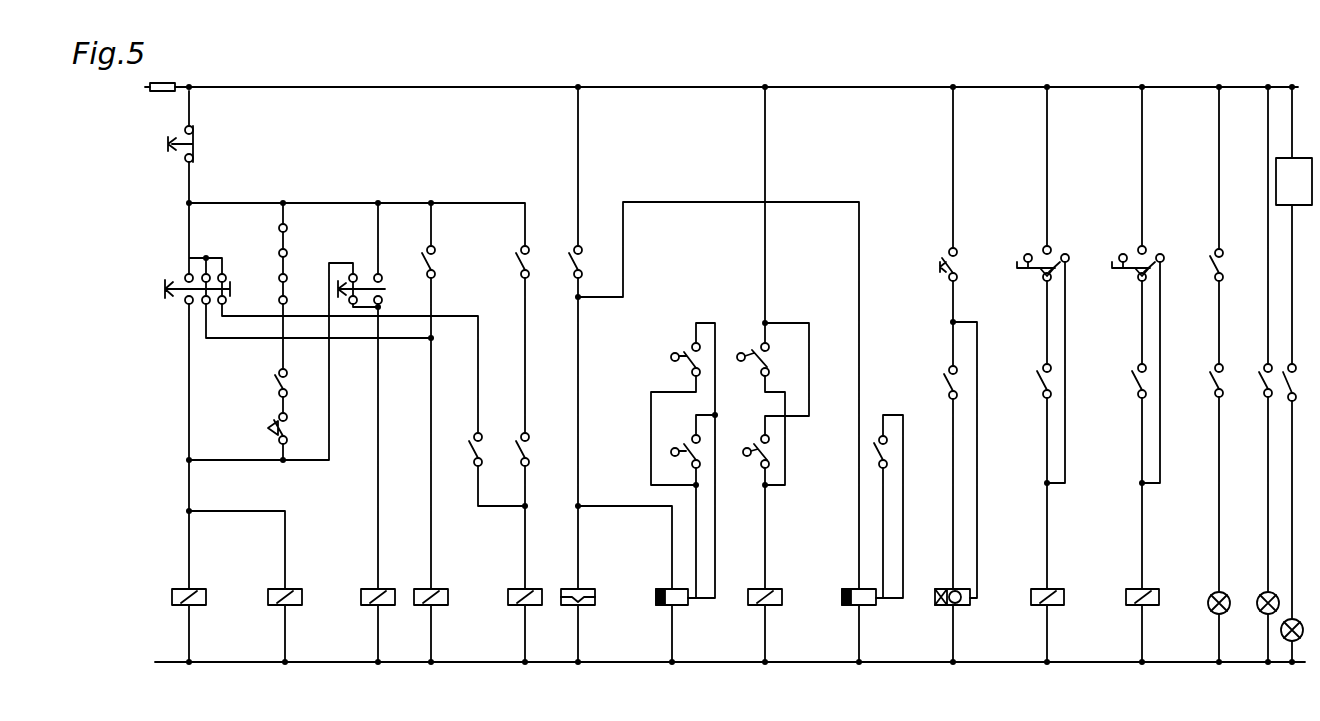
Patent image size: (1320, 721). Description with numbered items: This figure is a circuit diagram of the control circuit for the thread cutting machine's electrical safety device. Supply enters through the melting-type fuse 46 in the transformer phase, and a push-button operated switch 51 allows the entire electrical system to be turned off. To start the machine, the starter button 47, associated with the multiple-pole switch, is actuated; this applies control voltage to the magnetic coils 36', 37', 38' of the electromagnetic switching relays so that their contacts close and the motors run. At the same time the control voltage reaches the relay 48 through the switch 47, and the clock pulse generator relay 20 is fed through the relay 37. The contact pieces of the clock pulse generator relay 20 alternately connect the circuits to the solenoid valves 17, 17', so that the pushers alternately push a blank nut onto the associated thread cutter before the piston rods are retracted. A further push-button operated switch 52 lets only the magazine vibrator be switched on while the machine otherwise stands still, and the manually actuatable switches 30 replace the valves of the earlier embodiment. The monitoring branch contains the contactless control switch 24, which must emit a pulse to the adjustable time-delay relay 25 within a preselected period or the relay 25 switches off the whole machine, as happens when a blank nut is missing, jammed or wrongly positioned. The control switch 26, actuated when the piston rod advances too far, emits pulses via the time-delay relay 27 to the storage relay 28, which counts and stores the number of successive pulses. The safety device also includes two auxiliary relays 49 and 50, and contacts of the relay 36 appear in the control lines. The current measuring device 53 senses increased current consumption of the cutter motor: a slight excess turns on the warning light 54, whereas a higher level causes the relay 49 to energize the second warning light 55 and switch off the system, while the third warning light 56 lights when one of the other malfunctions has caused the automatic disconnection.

The melting-type fuse 46 is at (172, 82).
The push-button operated switch 51 is at (174, 156).
The starter button 47 is at (166, 292).
The push-button operated switch 52 is at (362, 272).
The storage relay 28 is at (280, 240).
The relay 48 is at (282, 292).
The electromagnetic switching relay 36 is at (258, 383).
The adjustable electrical time-delay relay 25 is at (266, 434).
The electromagnetic switching relay 37 is at (591, 260).
The magnetic coil 36' is at (201, 582).
The magnetic coil 37' is at (297, 582).
The magnetic coil 38' is at (361, 612).
The auxiliary relay 49 is at (472, 458).
The current measuring device 53 is at (530, 458).
The clock pulse generator relay 20 is at (580, 606).
The control switch 26 is at (687, 350).
The electrical contactless control switch 24 is at (768, 356).
The auxiliary relay 50 is at (878, 452).
The electrically adjustable time-delay relay 27 is at (940, 262).
The manually actuatable switch 30 is at (1050, 256).
The solenoid valve 17 is at (1060, 615).
The solenoid valve 17' is at (1156, 615).
The third warning light 56 is at (1209, 596).
The second warning light 55 is at (1258, 596).
The warning light 54 is at (1286, 642).